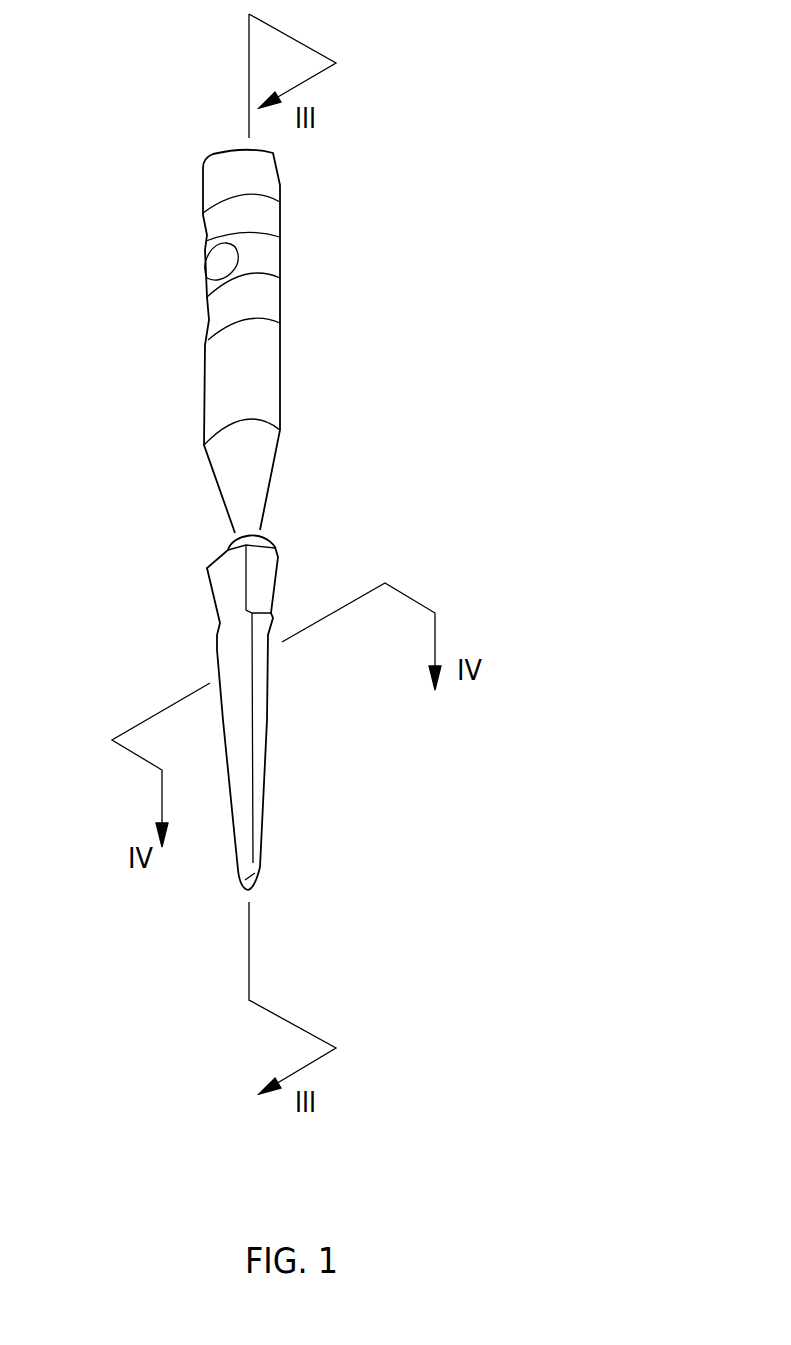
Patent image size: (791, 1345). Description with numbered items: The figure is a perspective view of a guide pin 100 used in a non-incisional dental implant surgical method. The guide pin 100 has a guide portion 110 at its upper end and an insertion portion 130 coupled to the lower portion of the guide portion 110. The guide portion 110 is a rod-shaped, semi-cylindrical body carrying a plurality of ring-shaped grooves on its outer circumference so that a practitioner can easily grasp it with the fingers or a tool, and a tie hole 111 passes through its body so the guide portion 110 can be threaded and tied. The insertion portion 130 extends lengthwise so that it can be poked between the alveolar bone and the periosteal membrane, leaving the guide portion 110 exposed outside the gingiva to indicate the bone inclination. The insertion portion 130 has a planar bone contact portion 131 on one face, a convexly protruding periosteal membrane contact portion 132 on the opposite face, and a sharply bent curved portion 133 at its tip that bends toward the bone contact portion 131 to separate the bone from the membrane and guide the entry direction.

The guide pin 100 is at (410, 204).
The guide portion 110 is at (195, 196).
The tie hole 111 is at (207, 266).
The insertion portion 130 is at (208, 657).
The bone contact portion 131 is at (268, 750).
The periosteal membrane contact portion 132 is at (233, 733).
The curved portion 133 is at (245, 880).